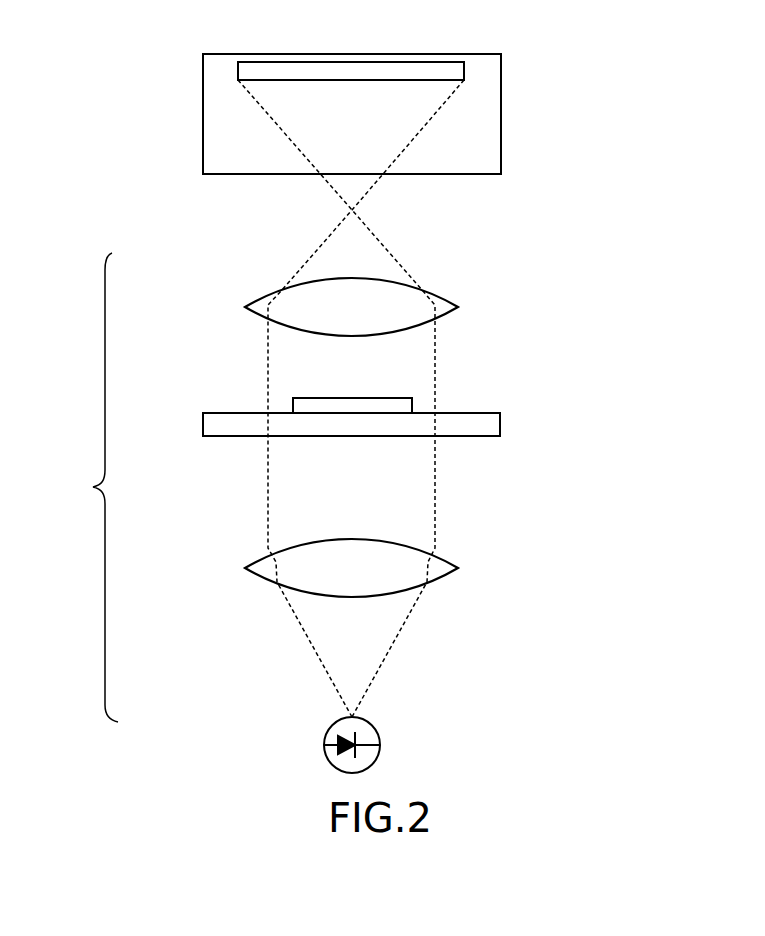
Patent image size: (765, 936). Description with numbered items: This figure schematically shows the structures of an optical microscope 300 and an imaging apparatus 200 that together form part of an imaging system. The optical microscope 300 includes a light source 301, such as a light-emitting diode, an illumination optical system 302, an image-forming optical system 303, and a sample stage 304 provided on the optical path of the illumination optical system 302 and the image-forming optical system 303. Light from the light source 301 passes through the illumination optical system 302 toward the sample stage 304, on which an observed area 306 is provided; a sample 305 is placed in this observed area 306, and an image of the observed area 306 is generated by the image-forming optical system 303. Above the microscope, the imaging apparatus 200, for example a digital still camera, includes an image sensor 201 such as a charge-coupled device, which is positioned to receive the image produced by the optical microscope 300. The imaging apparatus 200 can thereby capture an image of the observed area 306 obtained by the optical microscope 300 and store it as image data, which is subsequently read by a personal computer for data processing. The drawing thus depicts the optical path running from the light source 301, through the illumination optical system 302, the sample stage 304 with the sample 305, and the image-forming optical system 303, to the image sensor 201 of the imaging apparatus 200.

The imaging apparatus 200 is at (502, 117).
The image sensor 201 is at (425, 61).
The optical microscope 300 is at (81, 487).
The light source 301 is at (330, 730).
The illumination optical system 302 is at (257, 563).
The image-forming optical system 303 is at (255, 304).
The sample stage 304 is at (204, 427).
The sample 305 is at (383, 398).
The observed area 306 is at (423, 413).